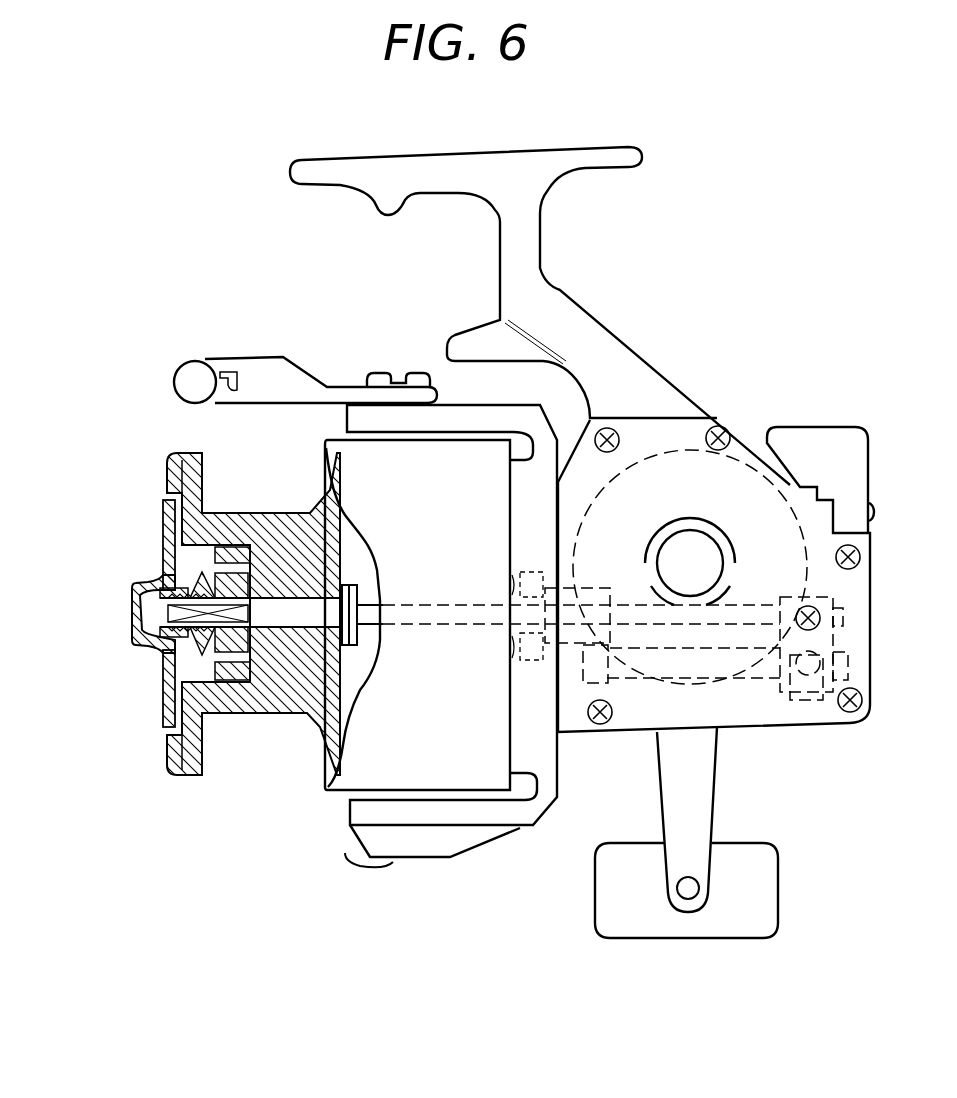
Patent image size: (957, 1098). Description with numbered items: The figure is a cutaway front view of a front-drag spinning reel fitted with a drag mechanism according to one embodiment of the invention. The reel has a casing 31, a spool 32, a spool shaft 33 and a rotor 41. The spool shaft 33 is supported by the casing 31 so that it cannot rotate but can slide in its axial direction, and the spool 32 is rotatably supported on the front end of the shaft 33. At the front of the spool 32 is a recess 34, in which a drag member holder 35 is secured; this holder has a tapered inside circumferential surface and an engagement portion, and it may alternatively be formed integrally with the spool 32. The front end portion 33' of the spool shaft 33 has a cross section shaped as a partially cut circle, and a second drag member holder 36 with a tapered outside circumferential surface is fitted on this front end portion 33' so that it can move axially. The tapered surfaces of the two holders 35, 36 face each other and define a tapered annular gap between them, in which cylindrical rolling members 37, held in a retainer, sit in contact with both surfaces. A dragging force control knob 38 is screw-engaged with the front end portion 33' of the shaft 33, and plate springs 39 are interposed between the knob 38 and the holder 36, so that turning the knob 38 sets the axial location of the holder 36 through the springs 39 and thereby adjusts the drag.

The casing 31 is at (680, 432).
The spool 32 is at (290, 535).
The spool shaft 33 is at (271, 704).
The front end portion of the spool shaft 33' is at (153, 605).
The recess 34 is at (185, 660).
The drag member holder 35 is at (234, 573).
The drag member holder 36 is at (228, 682).
The cylindrical rolling members 37 is at (228, 547).
The dragging force control knob 38 is at (165, 530).
The plate springs 39 is at (150, 657).
The rotor 41 is at (388, 417).